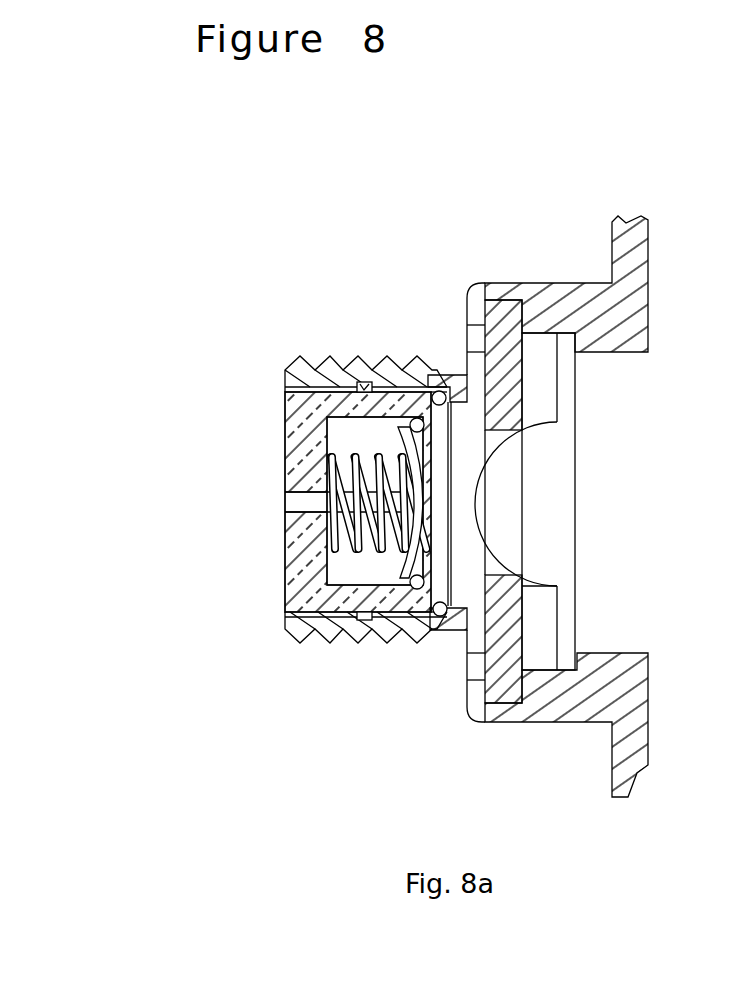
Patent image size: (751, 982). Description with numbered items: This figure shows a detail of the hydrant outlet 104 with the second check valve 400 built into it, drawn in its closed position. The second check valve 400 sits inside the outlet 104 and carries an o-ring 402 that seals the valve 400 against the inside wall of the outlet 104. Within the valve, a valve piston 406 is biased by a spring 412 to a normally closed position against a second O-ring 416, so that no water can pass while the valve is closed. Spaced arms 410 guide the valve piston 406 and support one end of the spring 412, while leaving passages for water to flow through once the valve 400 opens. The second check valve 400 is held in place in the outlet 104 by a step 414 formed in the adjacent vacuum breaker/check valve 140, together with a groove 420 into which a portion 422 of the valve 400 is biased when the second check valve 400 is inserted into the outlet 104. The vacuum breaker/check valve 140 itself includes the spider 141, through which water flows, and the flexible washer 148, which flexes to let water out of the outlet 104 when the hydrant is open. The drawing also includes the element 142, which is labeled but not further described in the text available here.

The vacuum breaker/check valve 140 is at (525, 203).
The housing lip 142 is at (468, 337).
The step 414 is at (467, 388).
The flexible washer 148 is at (505, 677).
The spider 141 is at (548, 470).
The second check valve 400 is at (285, 412).
The spaced arms 410 is at (303, 447).
The valve piston 406 is at (302, 502).
The groove 420 is at (370, 387).
The portion 422 is at (360, 383).
The outlet 104 is at (312, 613).
The spring 412 is at (345, 522).
The second O-ring 416 is at (423, 572).
The o-ring 402 is at (440, 616).